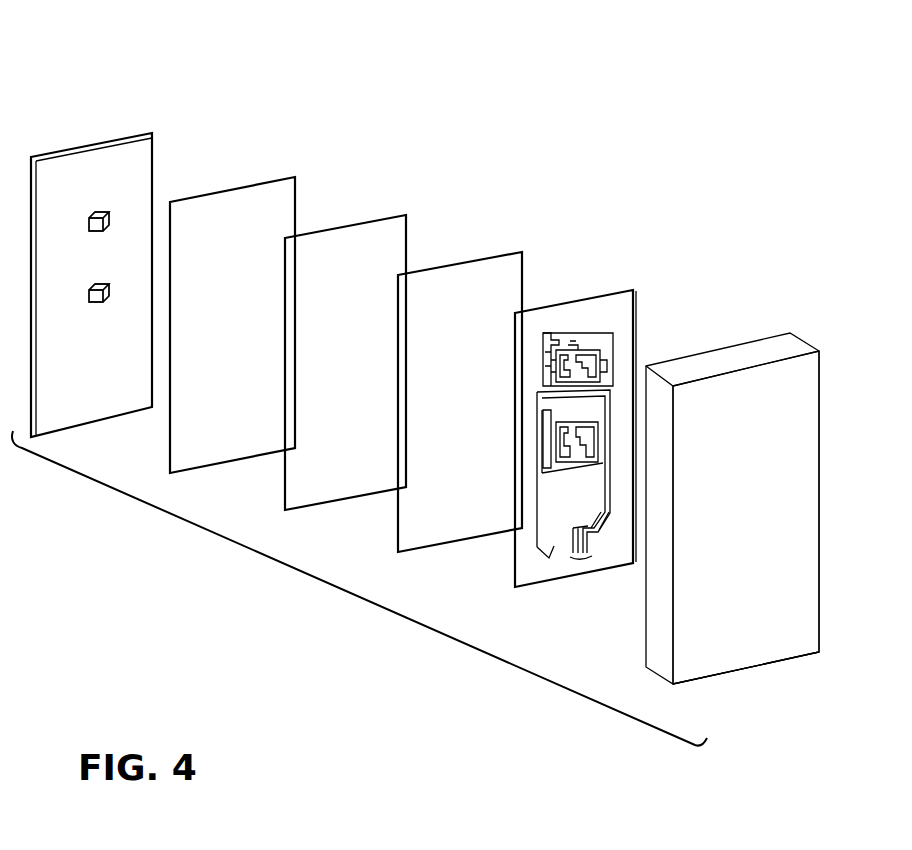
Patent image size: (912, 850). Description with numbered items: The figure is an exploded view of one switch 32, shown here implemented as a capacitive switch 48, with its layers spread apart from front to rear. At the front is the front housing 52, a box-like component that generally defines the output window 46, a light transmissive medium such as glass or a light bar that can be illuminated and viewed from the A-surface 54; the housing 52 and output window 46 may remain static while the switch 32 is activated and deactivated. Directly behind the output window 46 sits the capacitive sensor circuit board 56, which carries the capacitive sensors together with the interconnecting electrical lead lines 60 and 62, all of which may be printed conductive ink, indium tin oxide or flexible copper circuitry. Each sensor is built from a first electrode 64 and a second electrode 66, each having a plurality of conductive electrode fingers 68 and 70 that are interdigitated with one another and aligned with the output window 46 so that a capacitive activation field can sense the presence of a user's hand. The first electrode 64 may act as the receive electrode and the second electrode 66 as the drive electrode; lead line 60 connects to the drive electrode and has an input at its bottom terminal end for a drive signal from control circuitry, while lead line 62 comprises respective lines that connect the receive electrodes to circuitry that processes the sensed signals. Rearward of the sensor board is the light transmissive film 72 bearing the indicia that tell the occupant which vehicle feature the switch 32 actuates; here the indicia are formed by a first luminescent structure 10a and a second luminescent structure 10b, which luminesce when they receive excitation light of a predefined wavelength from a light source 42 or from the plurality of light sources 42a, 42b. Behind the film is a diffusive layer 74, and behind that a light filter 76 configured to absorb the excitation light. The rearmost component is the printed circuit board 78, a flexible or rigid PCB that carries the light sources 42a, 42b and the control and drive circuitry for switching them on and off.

The first luminescent structure 10a is at (218, 275).
The second luminescent structure 10b is at (228, 385).
The switch 32 is at (359, 588).
The light source 42 is at (82, 212).
The first light source 42a is at (95, 212).
The second light source 42b is at (100, 303).
The output window 46 is at (765, 490).
The capacitive switch 48 is at (567, 403).
The front housing 52 is at (744, 670).
The A-surface 54 is at (732, 498).
The capacitive sensor circuit board 56 is at (537, 568).
The electrical lead line 60 is at (536, 541).
The electrical lead line 62 is at (584, 560).
The first electrode 64 is at (604, 305).
The second electrode 66 is at (612, 364).
The first electrode fingers 68 is at (552, 364).
The second electrode fingers 70 is at (572, 350).
The light transmissive film 72 is at (232, 308).
The diffusive layer 74 is at (468, 288).
The light filter 76 is at (355, 245).
The printed circuit board 78 is at (120, 163).